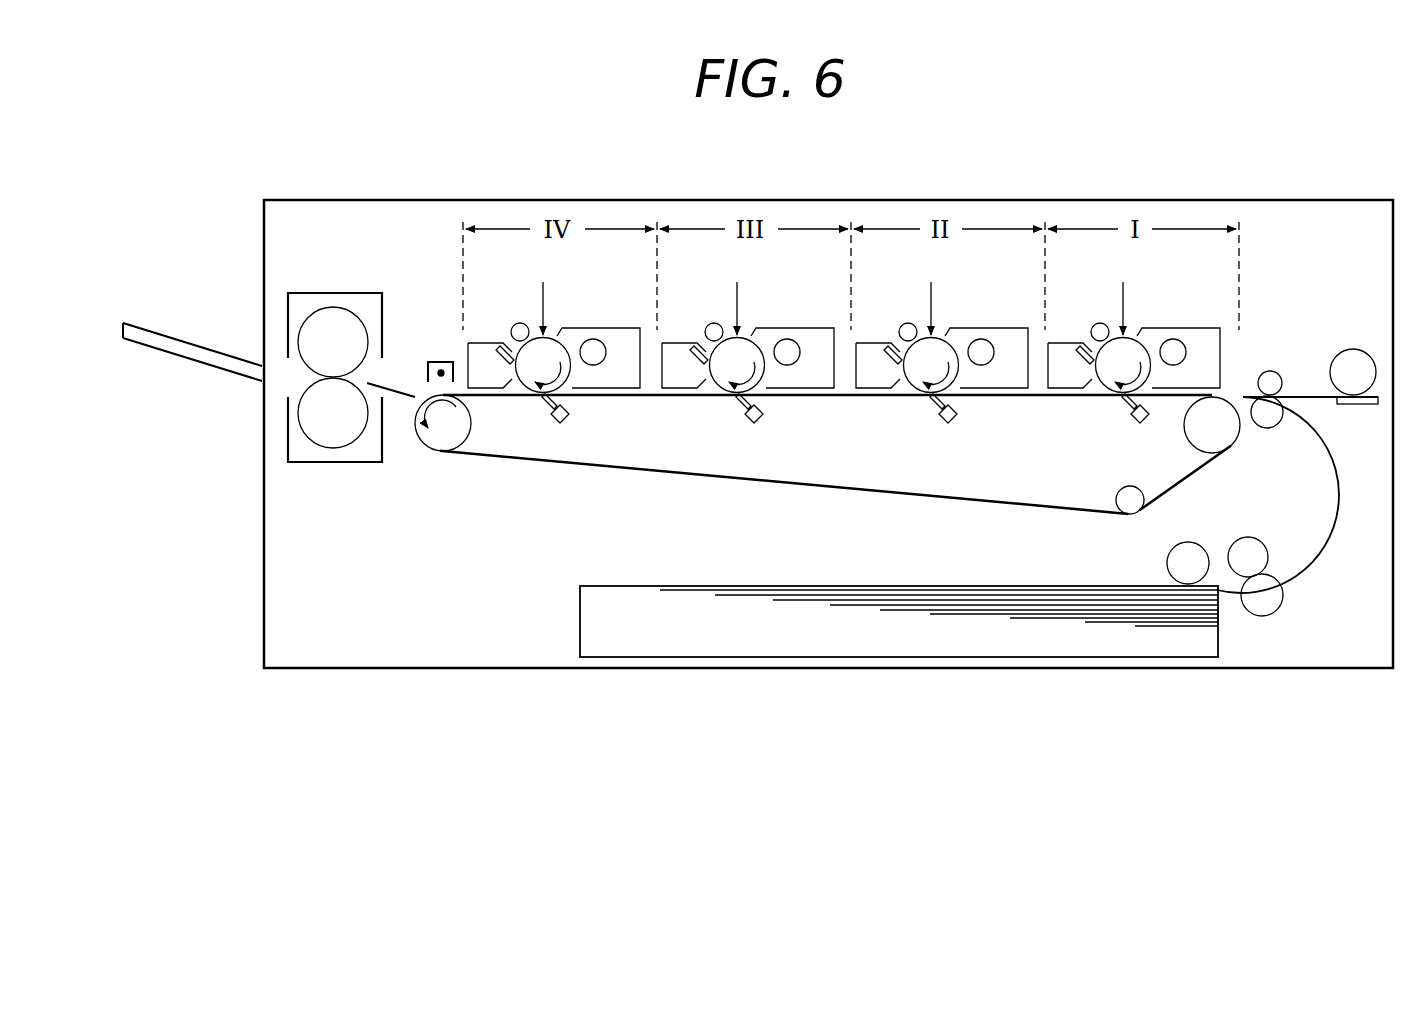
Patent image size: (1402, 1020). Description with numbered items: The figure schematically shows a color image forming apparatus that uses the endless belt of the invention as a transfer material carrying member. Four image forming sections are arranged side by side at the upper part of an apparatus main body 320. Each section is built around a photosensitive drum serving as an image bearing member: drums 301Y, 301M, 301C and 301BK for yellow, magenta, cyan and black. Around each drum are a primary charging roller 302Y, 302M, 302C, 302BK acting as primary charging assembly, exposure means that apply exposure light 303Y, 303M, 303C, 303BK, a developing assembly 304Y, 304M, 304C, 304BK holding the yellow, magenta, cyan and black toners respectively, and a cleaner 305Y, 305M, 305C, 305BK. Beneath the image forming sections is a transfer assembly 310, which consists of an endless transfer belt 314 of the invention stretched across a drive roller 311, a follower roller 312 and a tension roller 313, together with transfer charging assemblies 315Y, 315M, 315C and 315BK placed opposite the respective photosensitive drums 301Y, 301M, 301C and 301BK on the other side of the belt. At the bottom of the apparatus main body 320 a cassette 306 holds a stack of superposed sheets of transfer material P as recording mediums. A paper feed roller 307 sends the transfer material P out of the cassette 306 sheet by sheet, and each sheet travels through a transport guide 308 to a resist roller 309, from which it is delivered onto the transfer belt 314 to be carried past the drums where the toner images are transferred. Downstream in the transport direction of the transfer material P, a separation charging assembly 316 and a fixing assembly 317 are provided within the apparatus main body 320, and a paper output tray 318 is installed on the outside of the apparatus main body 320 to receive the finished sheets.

The apparatus main body 320 is at (1059, 202).
The photosensitive drum 301BK is at (561, 342).
The primary charging roller 302BK is at (521, 323).
The exposure light 303BK is at (543, 282).
The developing assembly 304BK is at (608, 328).
The cleaner 305BK is at (516, 392).
The transfer charging assembly 315BK is at (584, 412).
The photosensitive drum 301C is at (755, 342).
The primary charging roller 302C is at (715, 323).
The exposure light 303C is at (734, 282).
The developing assembly 304C is at (802, 328).
The cleaner 305C is at (710, 392).
The transfer charging assembly 315C is at (772, 412).
The photosensitive drum 301M is at (949, 342).
The primary charging roller 302M is at (909, 323).
The exposure light 303M is at (928, 282).
The developing assembly 304M is at (996, 328).
The cleaner 305M is at (904, 392).
The transfer charging assembly 315M is at (966, 412).
The photosensitive drum 301Y is at (1141, 342).
The primary charging roller 302Y is at (1101, 323).
The exposure light 303Y is at (1120, 282).
The developing assembly 304Y is at (1193, 328).
The cleaner 305Y is at (1095, 392).
The transfer charging assembly 315Y is at (1142, 425).
The cassette 306 is at (899, 635).
The paper feed roller 307 is at (1192, 556).
The transport guide 308 is at (1335, 535).
The resist roller 309 is at (1273, 411).
The transfer assembly 310 is at (732, 486).
The drive roller 311 is at (456, 450).
The follower roller 312 is at (1228, 443).
The tension roller 313 is at (1117, 508).
The endless transfer belt 314 is at (881, 493).
The separation charging assembly 316 is at (441, 361).
The fixing assembly 317 is at (329, 294).
The paper output tray 318 is at (123, 332).
The transfer material P is at (961, 588).